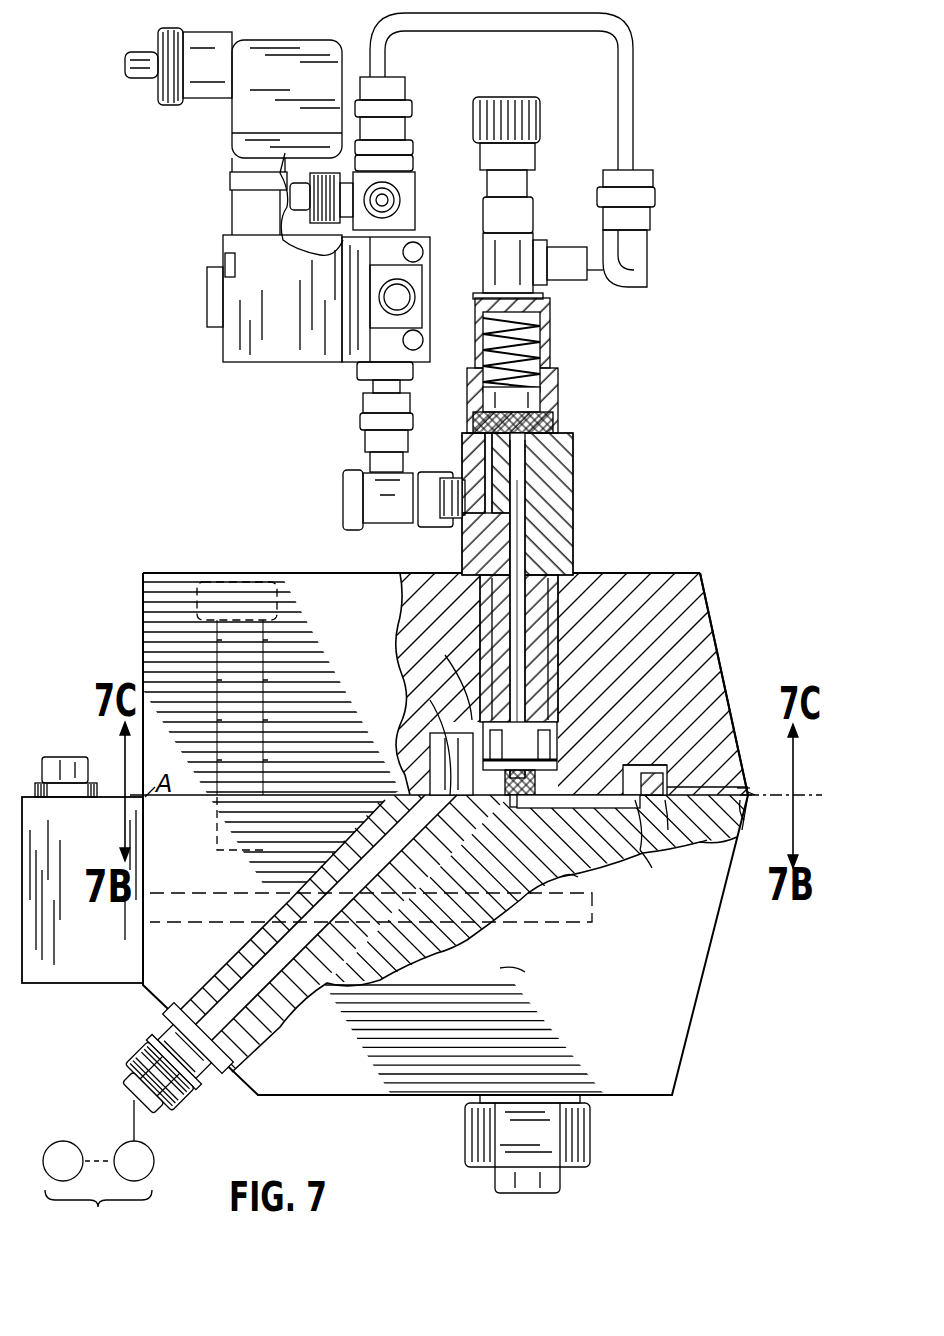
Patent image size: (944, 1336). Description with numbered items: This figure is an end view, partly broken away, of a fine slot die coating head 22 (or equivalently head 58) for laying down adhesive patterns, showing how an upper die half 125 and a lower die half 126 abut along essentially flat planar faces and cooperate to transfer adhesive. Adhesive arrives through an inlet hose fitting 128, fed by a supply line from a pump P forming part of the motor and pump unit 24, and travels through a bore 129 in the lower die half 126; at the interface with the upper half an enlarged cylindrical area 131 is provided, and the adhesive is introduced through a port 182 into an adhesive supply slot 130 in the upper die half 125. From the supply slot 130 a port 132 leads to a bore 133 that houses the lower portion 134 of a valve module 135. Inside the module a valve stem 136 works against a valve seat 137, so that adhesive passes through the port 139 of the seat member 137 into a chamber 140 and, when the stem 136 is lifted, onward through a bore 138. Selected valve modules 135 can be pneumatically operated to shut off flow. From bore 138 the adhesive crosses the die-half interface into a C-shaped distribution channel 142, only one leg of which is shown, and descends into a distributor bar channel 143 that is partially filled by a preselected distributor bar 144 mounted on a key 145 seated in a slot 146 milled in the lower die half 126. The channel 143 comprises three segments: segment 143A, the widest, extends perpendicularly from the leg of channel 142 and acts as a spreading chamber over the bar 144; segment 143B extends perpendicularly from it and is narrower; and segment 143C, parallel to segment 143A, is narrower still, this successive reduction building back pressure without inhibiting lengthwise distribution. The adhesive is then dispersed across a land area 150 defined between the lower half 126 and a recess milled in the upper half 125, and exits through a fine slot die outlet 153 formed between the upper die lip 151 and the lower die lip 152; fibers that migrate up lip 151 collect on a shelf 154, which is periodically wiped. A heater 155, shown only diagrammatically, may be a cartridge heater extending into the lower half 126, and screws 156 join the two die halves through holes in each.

The coating head 22 is at (672, 526).
The motor and pump unit 24 is at (90, 1203).
The coating head 58 is at (722, 558).
The upper die half 125 is at (353, 580).
The lower die half 126 is at (326, 1080).
The inlet hose fitting 128 is at (142, 1070).
The bore 129 is at (300, 938).
The adhesive supply slot 130 is at (430, 700).
The enlarged cylindrical area 131 is at (432, 746).
The port 132 is at (445, 655).
The bore 133 is at (558, 645).
The lower portion of valve module 134 is at (548, 665).
The valve module 135 is at (592, 462).
The valve stem 136 is at (527, 690).
The valve seat 137 is at (550, 760).
The bore 138 is at (575, 876).
The port of seat member 139 is at (540, 726).
The chamber 140 is at (520, 920).
The C-shaped distribution channel 142 is at (640, 850).
The distributor bar channel 143 is at (708, 690).
The segment of channel 143 143A is at (640, 780).
The segment of channel 143 143B is at (640, 766).
The segment of channel 143 143C is at (755, 786).
The distributor bar 144 is at (707, 842).
The key 145 is at (667, 818).
The slot 146 is at (646, 866).
The land area 150 is at (742, 814).
The die lip 151 is at (757, 787).
The die lip 152 is at (727, 798).
The fine slot die outlet 153 is at (760, 794).
The shelf 154 is at (742, 782).
The heater 155 is at (237, 893).
The screws 156 is at (236, 582).
The port 182 is at (512, 970).